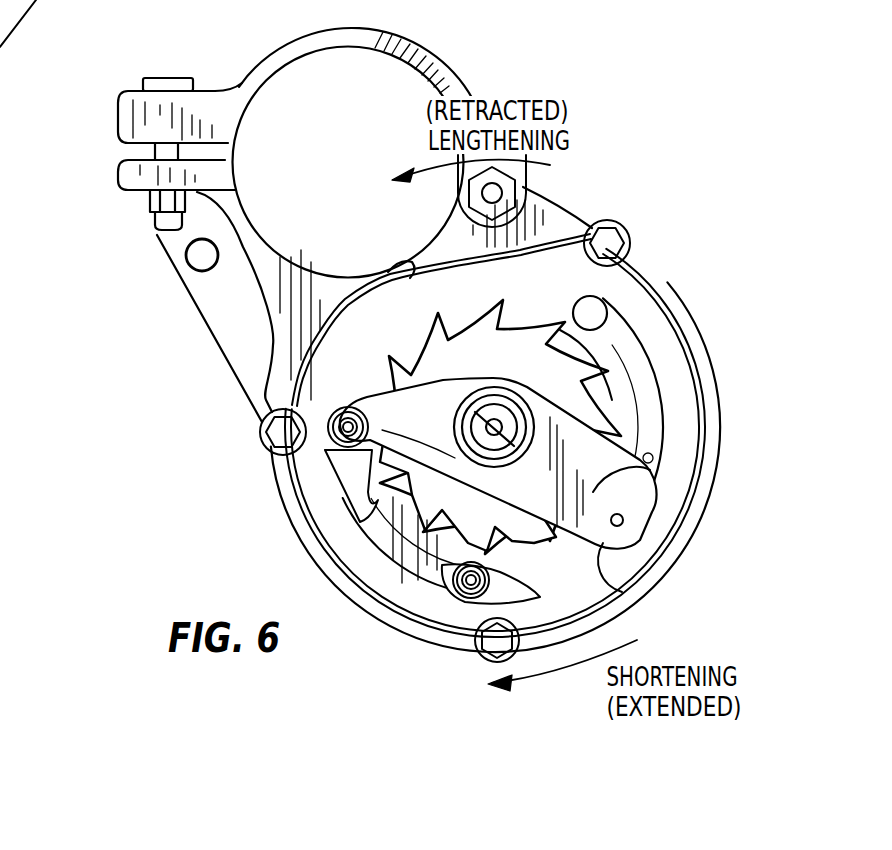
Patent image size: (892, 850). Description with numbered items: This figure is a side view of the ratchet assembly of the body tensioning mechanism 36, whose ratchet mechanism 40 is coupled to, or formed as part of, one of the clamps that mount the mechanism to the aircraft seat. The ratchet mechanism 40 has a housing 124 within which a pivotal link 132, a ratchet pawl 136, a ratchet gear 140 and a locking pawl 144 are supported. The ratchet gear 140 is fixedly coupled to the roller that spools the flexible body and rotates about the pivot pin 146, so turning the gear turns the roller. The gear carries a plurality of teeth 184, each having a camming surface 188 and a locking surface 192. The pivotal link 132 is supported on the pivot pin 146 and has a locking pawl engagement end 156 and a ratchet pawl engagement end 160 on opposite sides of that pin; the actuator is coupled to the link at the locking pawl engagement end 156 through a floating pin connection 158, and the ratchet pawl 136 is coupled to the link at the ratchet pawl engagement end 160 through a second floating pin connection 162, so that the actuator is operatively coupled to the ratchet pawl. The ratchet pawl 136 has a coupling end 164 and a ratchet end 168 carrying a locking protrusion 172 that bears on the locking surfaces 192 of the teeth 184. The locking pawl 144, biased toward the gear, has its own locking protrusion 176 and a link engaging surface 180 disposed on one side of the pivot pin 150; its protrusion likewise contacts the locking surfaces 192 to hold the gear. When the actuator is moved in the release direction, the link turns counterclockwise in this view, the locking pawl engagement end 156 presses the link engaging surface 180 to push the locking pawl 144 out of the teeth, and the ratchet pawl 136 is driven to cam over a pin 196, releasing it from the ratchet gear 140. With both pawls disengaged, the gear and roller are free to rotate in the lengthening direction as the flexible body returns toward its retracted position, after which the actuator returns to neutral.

The body tensioning mechanism 36 is at (23, 23).
The ratchet mechanism 40 is at (263, 508).
The housing 124 is at (647, 262).
The pivotal link 132 is at (640, 470).
The ratchet pawl 136 is at (653, 433).
The ratchet gear 140 is at (567, 402).
The locking pawl 144 is at (350, 560).
The pivot pin 146 is at (494, 427).
The pivot pin 150 is at (470, 590).
The locking pawl engagement end 156 is at (343, 407).
The floating pin connection 158 is at (348, 453).
The ratchet pawl engagement end 160 is at (612, 540).
The floating pin connection 162 is at (617, 520).
The coupling end 164 is at (650, 487).
The ratchet end 168 is at (627, 342).
The locking protrusion 172 is at (590, 347).
The locking protrusion 176 is at (382, 490).
The link engaging surface 180 is at (330, 427).
The teeth 184 is at (487, 543).
The camming surface 188 is at (533, 303).
The locking surface 192 is at (475, 308).
The pin 196 is at (603, 297).